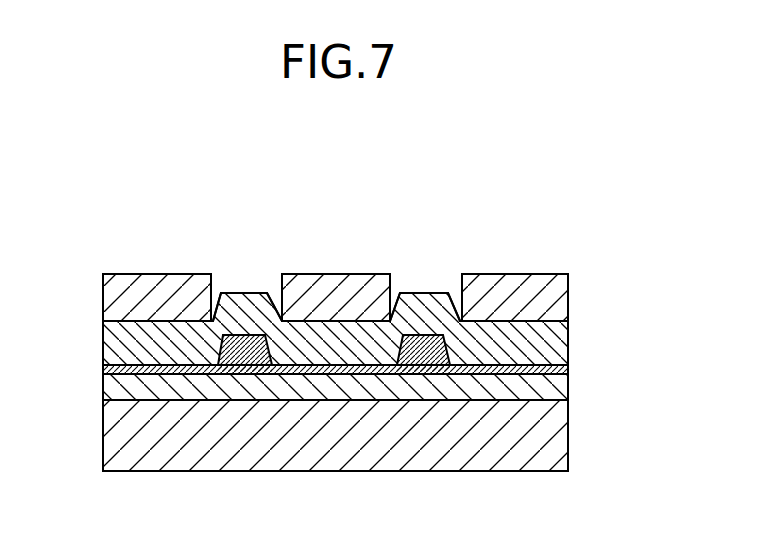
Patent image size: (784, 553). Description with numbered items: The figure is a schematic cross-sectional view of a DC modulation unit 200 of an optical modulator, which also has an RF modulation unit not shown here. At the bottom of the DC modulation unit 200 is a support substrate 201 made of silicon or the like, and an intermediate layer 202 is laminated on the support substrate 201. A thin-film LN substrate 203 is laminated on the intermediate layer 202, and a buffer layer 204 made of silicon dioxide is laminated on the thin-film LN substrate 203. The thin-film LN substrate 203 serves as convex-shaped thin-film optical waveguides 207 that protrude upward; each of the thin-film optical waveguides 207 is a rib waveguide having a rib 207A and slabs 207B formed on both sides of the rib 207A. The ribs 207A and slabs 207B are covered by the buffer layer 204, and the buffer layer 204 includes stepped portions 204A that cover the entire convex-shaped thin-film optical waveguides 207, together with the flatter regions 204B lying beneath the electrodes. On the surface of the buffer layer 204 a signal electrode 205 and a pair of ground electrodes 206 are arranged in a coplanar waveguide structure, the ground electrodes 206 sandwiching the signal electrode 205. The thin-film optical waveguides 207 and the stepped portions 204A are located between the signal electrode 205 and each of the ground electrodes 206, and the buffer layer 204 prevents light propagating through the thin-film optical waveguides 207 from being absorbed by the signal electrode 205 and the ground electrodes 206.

The DC modulation unit 200 is at (709, 187).
The support substrate 201 is at (552, 450).
The intermediate layer 202 is at (560, 388).
The thin-film LN substrate 203 is at (110, 368).
The buffer layer 204 is at (381, 247).
The stepped portions 204A is at (272, 290).
The flat portion of insulating layer 204B is at (138, 337).
The signal electrode 205 is at (367, 290).
The ground electrodes 206 is at (132, 283).
The thin-film optical waveguides 207 is at (339, 359).
The rib 207A is at (236, 340).
The slabs 207B is at (183, 365).